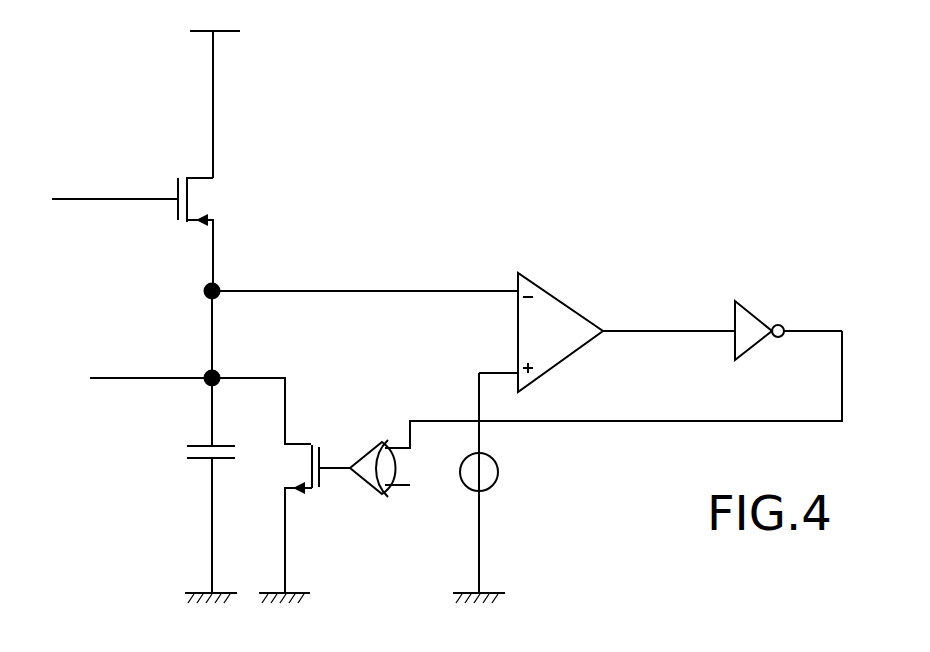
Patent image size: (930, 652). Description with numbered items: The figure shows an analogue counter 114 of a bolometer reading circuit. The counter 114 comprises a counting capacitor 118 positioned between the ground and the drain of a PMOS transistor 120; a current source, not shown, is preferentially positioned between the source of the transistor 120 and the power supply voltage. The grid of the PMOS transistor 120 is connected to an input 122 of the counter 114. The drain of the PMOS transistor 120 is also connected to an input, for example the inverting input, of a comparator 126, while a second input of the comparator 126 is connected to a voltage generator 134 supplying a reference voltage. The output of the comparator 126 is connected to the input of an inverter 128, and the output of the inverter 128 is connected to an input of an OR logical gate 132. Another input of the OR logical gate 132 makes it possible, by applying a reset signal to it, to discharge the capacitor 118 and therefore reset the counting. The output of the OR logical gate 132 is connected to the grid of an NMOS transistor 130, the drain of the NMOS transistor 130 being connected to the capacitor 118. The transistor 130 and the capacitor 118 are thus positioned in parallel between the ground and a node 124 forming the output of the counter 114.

The counter 114 is at (620, 133).
The counting capacitor 118 is at (197, 460).
The PMOS transistor 120 is at (190, 188).
The input 122 is at (120, 199).
The node 124 is at (127, 380).
The comparator 126 is at (557, 302).
The inverter 128 is at (750, 318).
The NMOS transistor 130 is at (297, 443).
The OR logical gate 132 is at (363, 478).
The voltage generator 134 is at (497, 472).